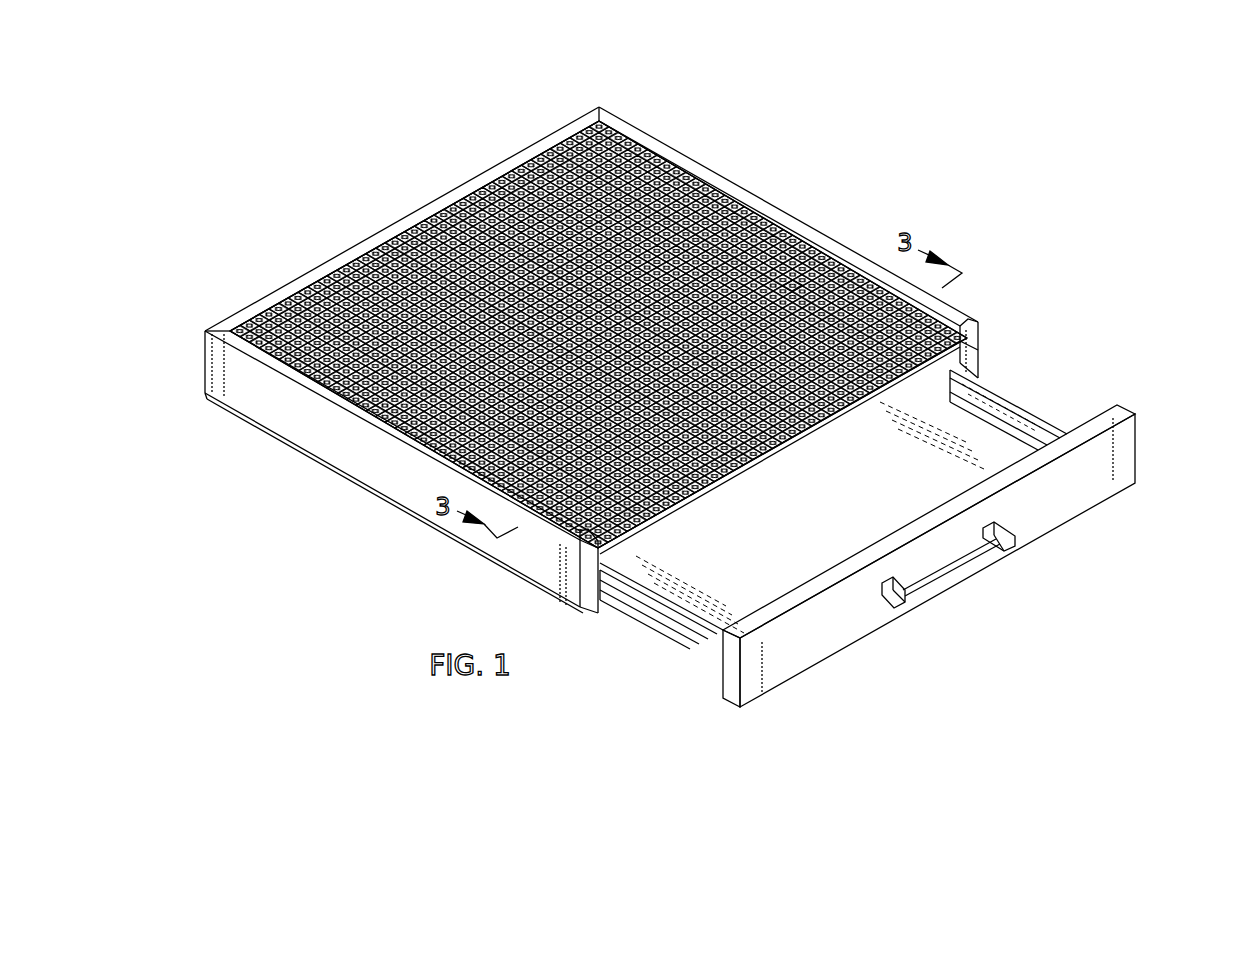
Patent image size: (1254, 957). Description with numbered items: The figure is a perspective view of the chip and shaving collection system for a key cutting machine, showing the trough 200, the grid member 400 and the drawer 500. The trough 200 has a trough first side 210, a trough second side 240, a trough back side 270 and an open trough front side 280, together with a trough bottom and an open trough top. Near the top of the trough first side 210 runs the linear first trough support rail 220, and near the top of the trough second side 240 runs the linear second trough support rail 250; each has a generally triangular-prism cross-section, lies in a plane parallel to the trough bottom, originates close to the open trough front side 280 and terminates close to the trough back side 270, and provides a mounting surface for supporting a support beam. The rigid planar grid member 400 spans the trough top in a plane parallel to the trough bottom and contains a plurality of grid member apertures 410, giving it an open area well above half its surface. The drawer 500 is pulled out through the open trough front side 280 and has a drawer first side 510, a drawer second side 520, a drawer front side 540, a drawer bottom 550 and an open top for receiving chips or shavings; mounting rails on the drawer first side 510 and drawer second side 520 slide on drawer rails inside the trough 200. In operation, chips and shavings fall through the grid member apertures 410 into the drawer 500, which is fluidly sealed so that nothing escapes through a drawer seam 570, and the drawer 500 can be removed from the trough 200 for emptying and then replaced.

The trough 200 is at (372, 200).
The trough first side 210 is at (673, 157).
The first trough support rail 220 is at (968, 328).
The trough second side 240 is at (308, 418).
The second trough support rail 250 is at (580, 557).
The trough back side 270 is at (542, 142).
The open trough front side 280 is at (968, 353).
The grid member 400 is at (740, 227).
The grid member aperture 410 is at (790, 283).
The drawer 500 is at (1052, 580).
The drawer first side 510 is at (1018, 402).
The drawer second side 520 is at (703, 637).
The drawer front side 540 is at (847, 617).
The drawer bottom 550 is at (813, 477).
The drawer seam 570 is at (1018, 440).